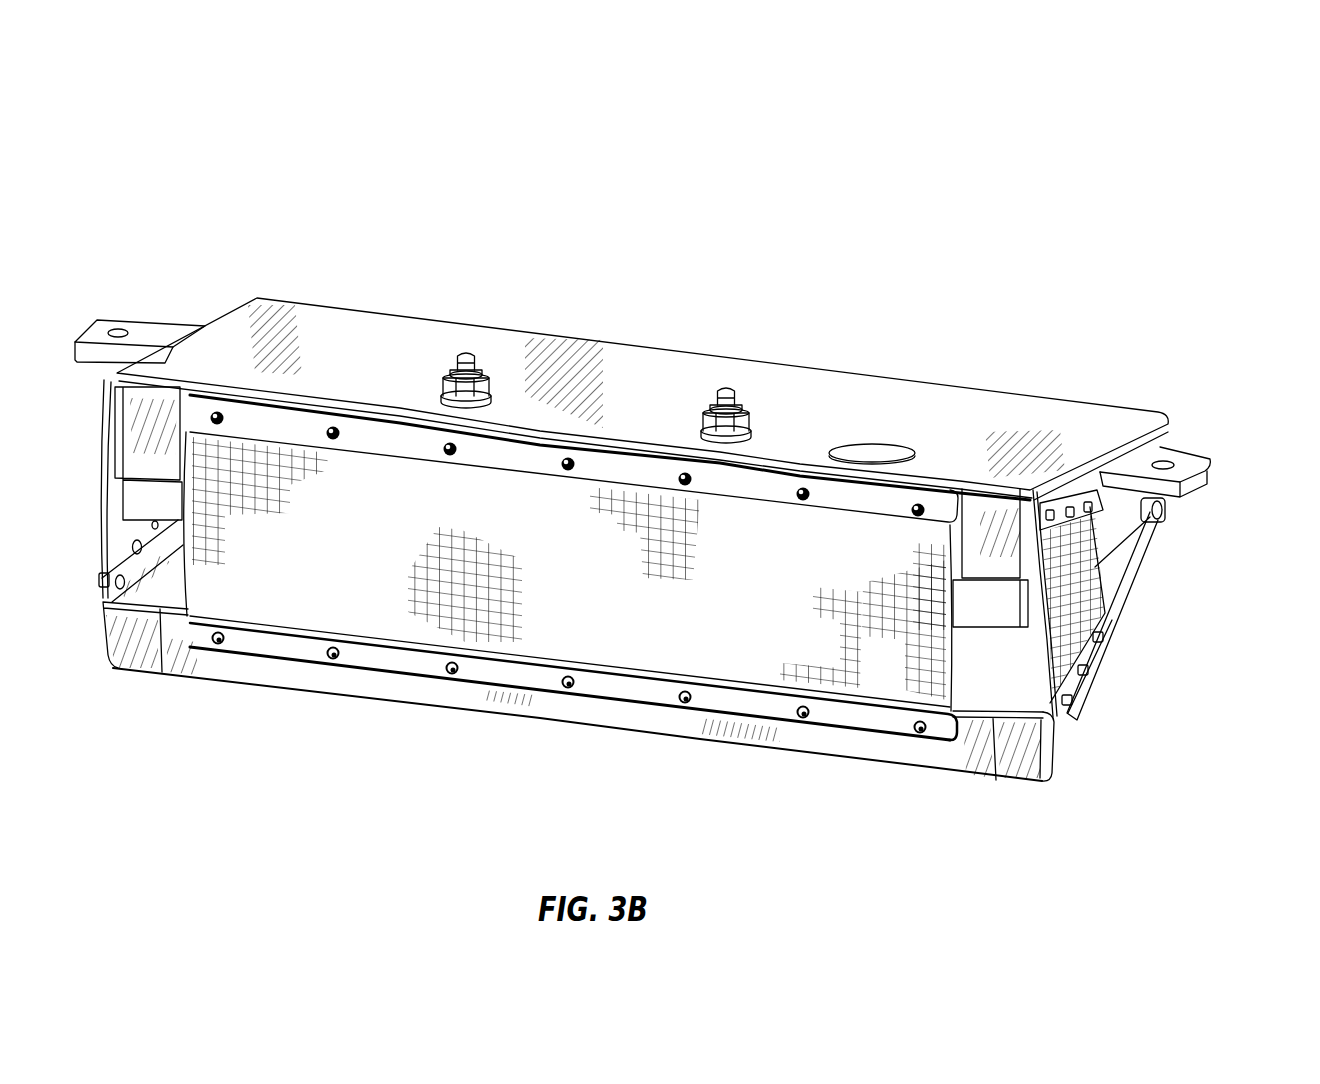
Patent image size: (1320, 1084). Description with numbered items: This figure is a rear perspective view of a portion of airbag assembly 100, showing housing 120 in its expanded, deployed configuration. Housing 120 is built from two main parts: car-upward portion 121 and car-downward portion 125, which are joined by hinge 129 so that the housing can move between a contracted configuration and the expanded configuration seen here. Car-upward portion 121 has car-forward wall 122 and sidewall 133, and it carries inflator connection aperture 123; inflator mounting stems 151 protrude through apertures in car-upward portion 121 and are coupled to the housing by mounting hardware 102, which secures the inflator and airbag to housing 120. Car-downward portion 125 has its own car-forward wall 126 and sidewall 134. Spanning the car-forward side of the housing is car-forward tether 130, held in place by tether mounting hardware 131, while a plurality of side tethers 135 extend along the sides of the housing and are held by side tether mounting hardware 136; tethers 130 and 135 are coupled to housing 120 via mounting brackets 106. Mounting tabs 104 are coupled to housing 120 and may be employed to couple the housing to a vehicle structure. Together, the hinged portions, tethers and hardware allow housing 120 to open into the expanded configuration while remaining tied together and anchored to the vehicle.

The airbag assembly 100 is at (958, 166).
The mounting hardware 102 is at (486, 392).
The mounting tabs 104 is at (148, 335).
The mounting brackets 106 is at (278, 428).
The housing 120 is at (622, 325).
The car-upward portion 121 is at (578, 394).
The car-forward wall 122 is at (990, 604).
The inflator connection aperture 123 is at (868, 458).
The car-downward portion 125 is at (332, 682).
The car-forward wall 126 is at (971, 753).
The hinge 129 is at (1168, 511).
The car-forward tether 130 is at (780, 627).
The tether mounting hardware 131 is at (573, 463).
The sidewall 133 is at (1183, 461).
The sidewall 134 is at (1056, 746).
The side tethers 135 is at (120, 526).
The side tether mounting hardware 136 is at (1088, 486).
The inflator mounting stems 151 is at (463, 349).